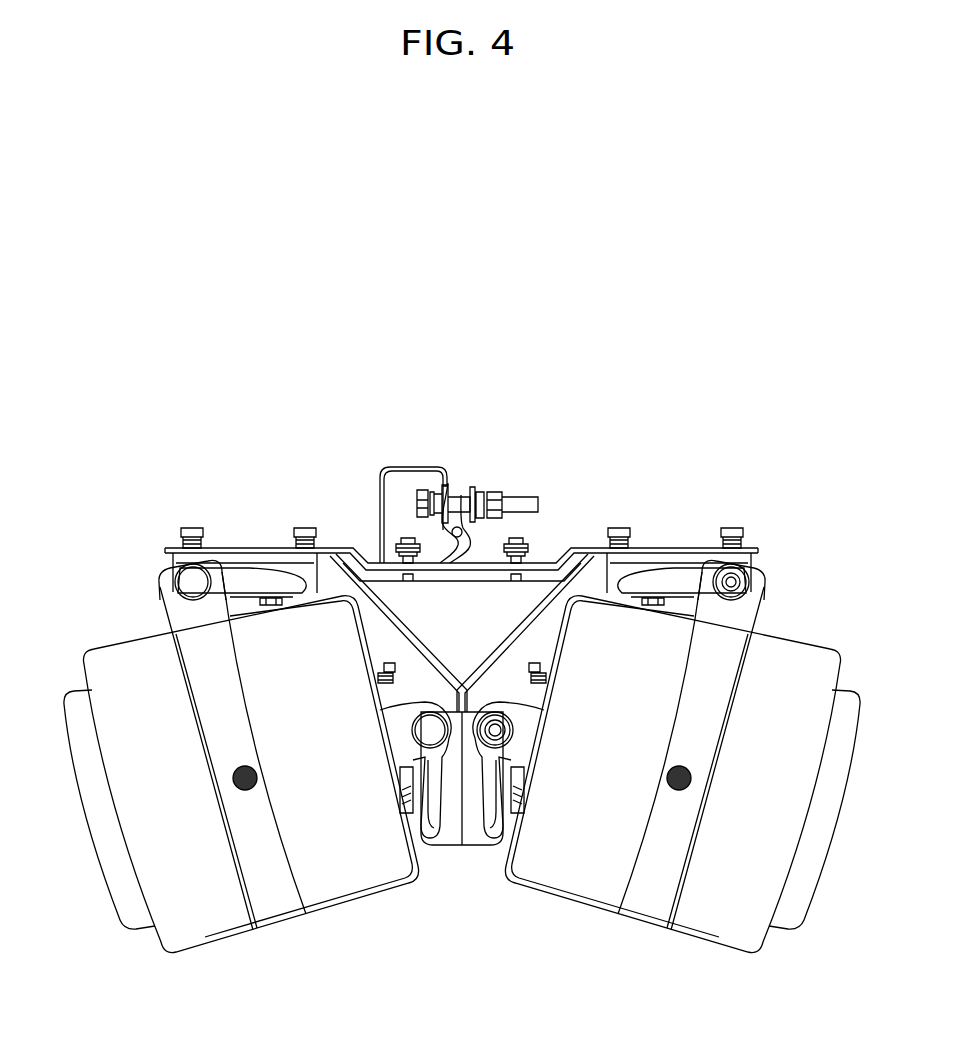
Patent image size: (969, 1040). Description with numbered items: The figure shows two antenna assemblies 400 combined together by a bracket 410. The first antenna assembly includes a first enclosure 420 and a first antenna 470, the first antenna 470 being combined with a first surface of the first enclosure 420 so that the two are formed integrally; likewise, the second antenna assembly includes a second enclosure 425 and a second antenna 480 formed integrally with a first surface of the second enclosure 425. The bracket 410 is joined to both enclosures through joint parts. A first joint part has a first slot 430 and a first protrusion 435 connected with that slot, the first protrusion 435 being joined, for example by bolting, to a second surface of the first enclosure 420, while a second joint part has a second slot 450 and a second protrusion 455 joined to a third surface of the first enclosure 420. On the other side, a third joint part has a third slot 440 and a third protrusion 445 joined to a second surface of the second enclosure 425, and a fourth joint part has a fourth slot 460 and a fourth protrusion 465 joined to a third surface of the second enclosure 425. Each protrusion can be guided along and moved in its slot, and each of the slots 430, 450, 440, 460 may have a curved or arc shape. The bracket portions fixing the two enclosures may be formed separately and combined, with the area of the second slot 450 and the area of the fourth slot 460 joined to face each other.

The bolt assembly 400 is at (459, 490).
The bracket 410 is at (398, 478).
The first enclosure 420 is at (162, 951).
The second enclosure 425 is at (762, 951).
The first slot 430 is at (246, 579).
The third slot 440 is at (678, 579).
The first protrusion 435 is at (188, 582).
The third protrusion 445 is at (742, 582).
The second slot 450 is at (434, 838).
The fourth slot 460 is at (490, 838).
The second protrusion 455 is at (422, 735).
The fourth protrusion 465 is at (495, 737).
The first antenna 470 is at (90, 820).
The second antenna 480 is at (834, 830).